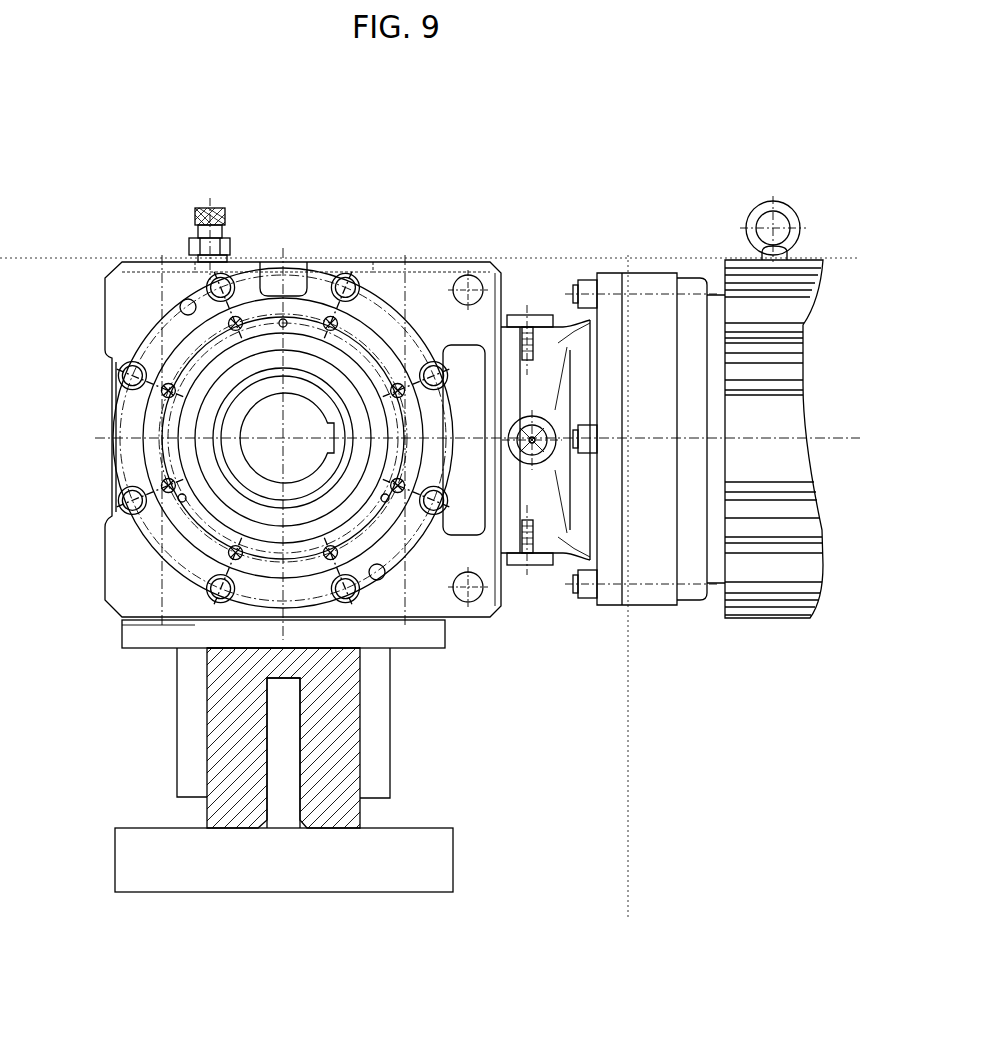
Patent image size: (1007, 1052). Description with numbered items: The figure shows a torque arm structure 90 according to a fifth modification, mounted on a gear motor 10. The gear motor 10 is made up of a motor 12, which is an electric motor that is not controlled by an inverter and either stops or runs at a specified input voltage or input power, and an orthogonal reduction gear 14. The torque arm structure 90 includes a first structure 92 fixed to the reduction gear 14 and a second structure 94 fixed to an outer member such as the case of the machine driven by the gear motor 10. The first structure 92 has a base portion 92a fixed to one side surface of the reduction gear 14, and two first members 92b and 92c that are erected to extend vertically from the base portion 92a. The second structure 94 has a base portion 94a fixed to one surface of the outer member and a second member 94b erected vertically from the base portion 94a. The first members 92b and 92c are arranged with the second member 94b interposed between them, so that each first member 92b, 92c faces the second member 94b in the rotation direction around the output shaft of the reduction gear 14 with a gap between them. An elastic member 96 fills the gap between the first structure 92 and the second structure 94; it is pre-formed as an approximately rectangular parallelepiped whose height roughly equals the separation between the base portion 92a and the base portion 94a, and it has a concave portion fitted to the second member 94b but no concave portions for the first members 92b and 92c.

The gear motor 10 is at (632, 193).
The motor 12 is at (743, 278).
The reduction gear 14 is at (450, 272).
The torque arm structure 90 is at (643, 623).
The first structure 92 is at (38, 618).
The base portion 92a is at (137, 637).
The first member 92b is at (190, 705).
The first member 92c is at (375, 665).
The second structure 94 is at (545, 767).
The base portion 94a is at (425, 862).
The second member 94b is at (310, 767).
The elastic member 96 is at (330, 698).